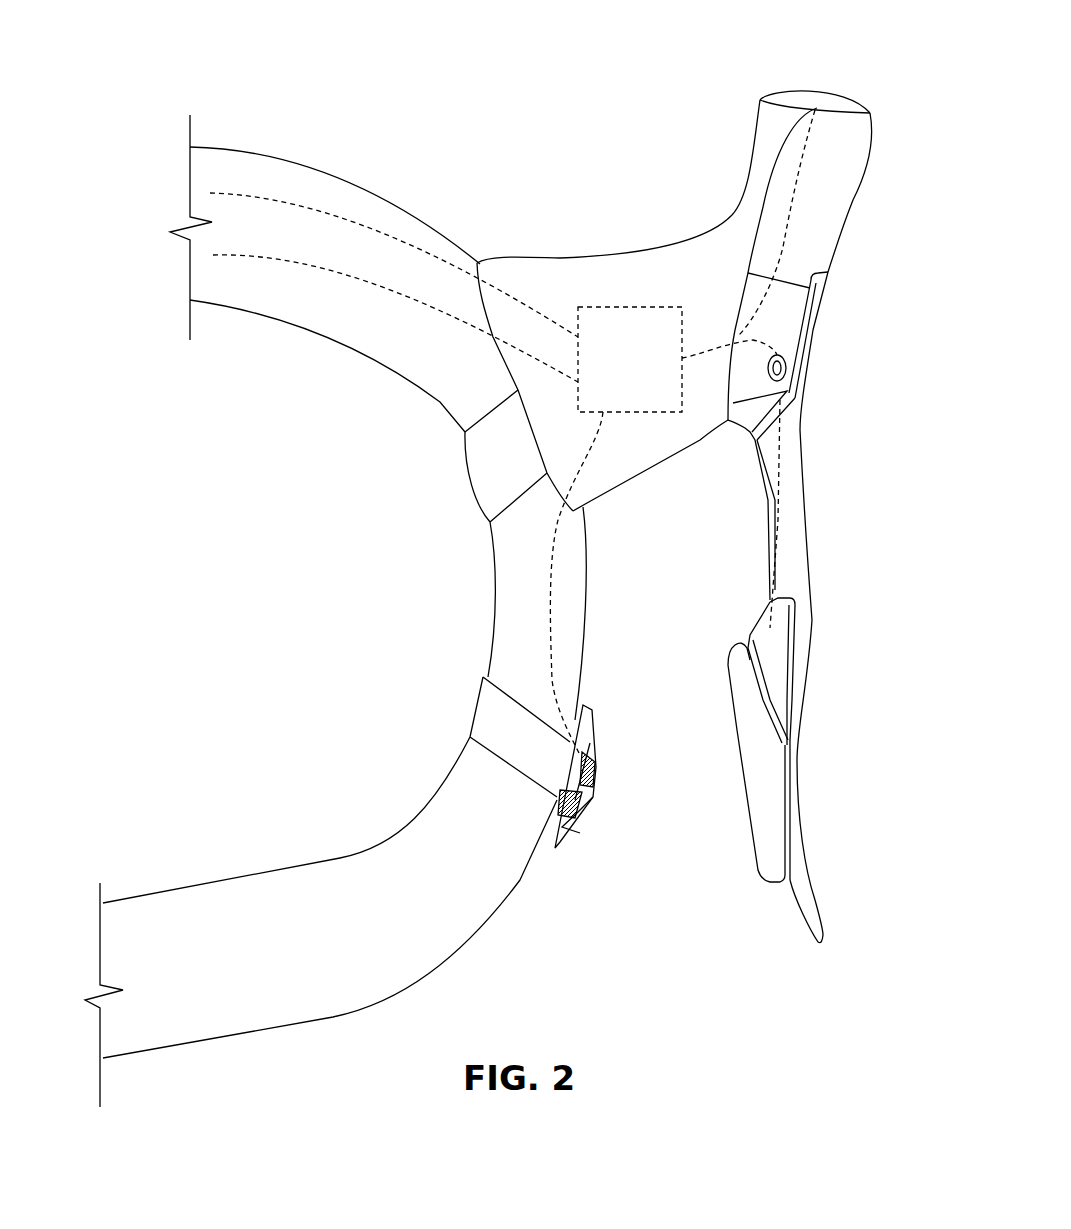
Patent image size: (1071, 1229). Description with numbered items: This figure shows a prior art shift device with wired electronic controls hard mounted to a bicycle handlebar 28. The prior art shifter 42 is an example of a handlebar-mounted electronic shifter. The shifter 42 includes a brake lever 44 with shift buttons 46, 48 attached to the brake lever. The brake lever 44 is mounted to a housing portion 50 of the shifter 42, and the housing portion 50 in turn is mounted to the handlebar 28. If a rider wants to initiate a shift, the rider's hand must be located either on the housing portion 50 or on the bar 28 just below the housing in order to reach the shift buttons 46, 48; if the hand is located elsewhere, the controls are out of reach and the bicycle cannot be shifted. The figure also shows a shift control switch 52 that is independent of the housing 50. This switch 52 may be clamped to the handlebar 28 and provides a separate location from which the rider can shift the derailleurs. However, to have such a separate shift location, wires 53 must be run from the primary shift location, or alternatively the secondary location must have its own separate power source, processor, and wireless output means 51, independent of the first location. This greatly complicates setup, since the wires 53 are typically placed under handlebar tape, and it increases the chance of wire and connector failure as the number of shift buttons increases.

The handlebar 28 is at (297, 138).
The shifter 42 is at (687, 477).
The brake lever 44 is at (810, 567).
The shift button 46 is at (748, 708).
The shift button 48 is at (768, 652).
The housing portion 50 is at (590, 258).
The wireless output means 51 is at (657, 307).
The shift control switch 52 is at (577, 830).
The wires 53 is at (552, 622).